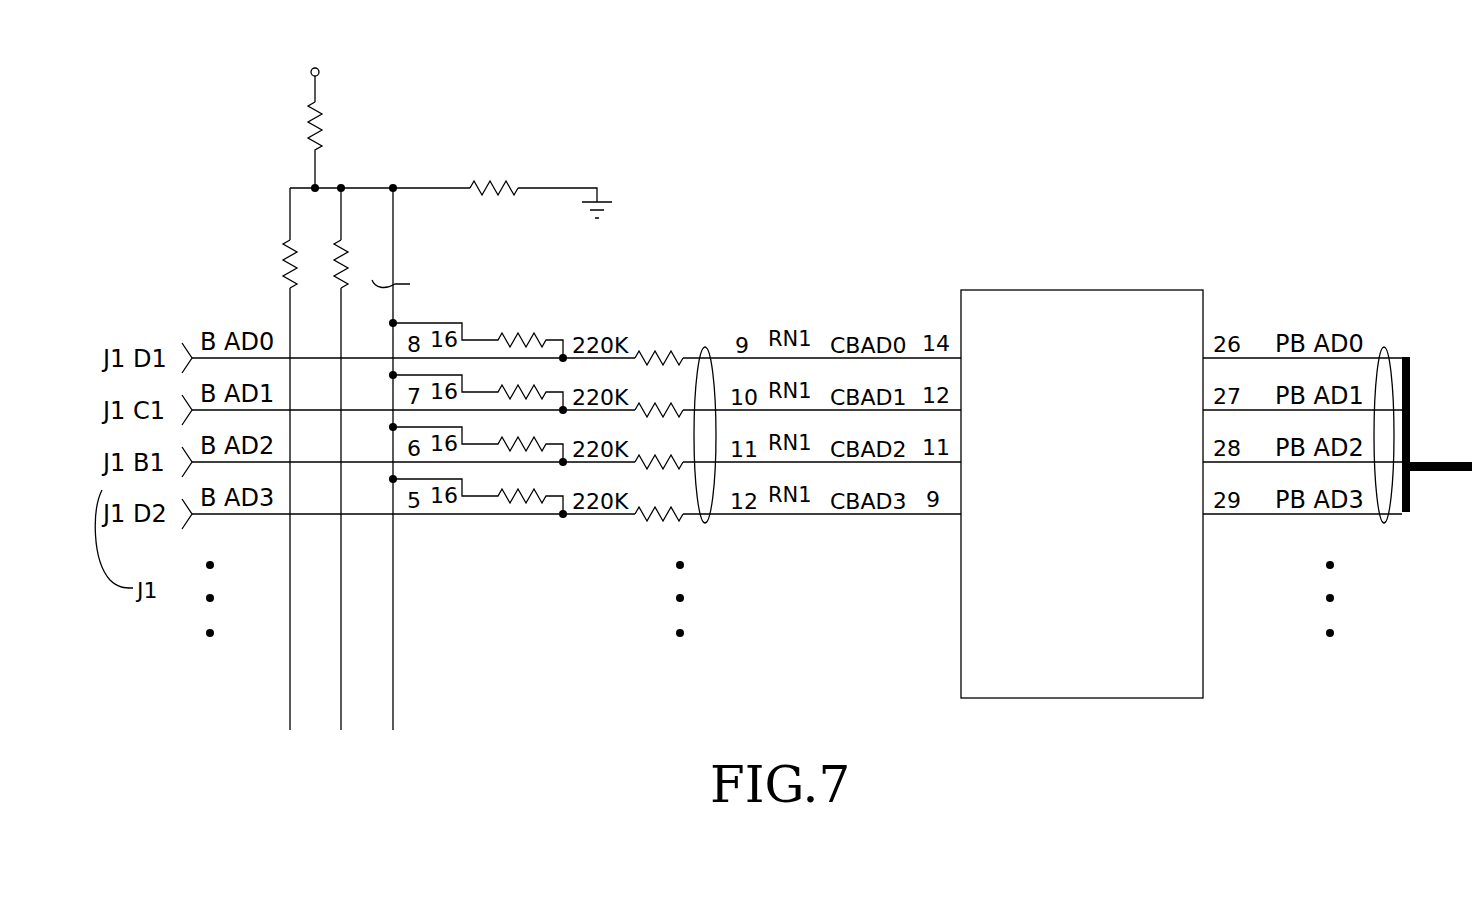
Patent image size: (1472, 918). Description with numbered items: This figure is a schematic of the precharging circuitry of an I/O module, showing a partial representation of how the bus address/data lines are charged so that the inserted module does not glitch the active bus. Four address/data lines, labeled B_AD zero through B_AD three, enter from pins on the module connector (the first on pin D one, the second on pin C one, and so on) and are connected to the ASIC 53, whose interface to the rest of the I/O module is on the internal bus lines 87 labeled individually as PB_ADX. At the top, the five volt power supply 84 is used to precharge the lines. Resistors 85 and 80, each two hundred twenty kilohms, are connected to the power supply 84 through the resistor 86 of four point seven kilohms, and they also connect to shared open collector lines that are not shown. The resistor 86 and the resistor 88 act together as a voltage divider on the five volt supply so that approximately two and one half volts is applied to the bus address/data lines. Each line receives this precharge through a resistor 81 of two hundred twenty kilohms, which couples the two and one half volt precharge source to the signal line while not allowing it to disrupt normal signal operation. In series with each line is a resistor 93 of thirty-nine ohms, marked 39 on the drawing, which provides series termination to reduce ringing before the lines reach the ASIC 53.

The power supply 84 is at (319, 73).
The resistor 86 is at (313, 108).
The resistor 88 is at (513, 185).
The resistor 85 is at (289, 240).
The resistor 80 is at (346, 247).
The resistor 81 is at (523, 333).
The resistor network RN1 39 is at (659, 422).
The resistor 93 is at (705, 350).
The ASIC 53 is at (1076, 290).
The internal bus lines 87 is at (1384, 350).